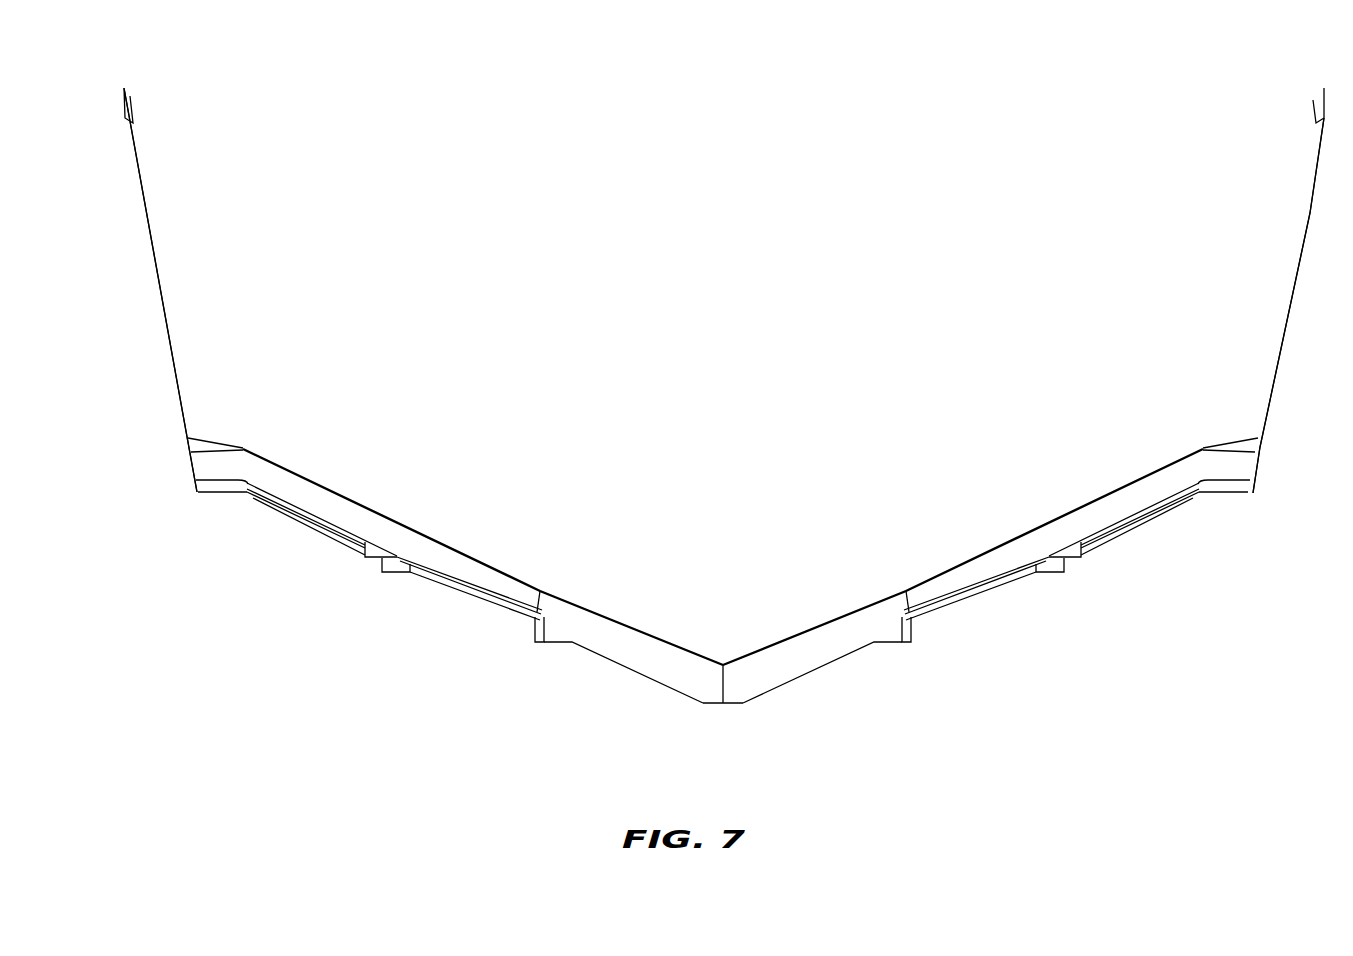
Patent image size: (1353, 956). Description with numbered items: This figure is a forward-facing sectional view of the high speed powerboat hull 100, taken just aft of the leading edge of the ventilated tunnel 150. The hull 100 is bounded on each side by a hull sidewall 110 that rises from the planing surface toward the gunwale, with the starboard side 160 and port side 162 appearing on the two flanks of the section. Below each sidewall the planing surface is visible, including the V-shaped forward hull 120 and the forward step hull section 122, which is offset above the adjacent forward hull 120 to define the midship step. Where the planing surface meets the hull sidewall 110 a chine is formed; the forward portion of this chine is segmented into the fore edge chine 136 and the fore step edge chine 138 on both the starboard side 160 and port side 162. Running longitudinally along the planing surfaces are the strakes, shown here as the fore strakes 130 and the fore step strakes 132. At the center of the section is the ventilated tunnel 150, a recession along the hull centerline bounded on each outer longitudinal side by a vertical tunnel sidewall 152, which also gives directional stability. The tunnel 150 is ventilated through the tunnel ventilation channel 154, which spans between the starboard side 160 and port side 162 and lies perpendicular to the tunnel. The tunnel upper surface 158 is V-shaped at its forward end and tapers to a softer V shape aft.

The powerboat hull 100 is at (1210, 726).
The hull sidewall 110 is at (152, 224).
The forward hull 120 is at (535, 623).
The forward step hull section 122 is at (457, 587).
The fore strakes 130 is at (544, 632).
The fore step strakes 132 is at (382, 558).
The fore edge chine 136 is at (232, 495).
The fore step edge chine 138 is at (217, 494).
The ventilated tunnel 150 is at (691, 718).
The tunnel sidewall 152 is at (547, 594).
The tunnel ventilation channel 154 is at (638, 655).
The tunnel upper surface 158 is at (657, 690).
The starboard side 160 is at (1250, 216).
The port side 162 is at (192, 214).